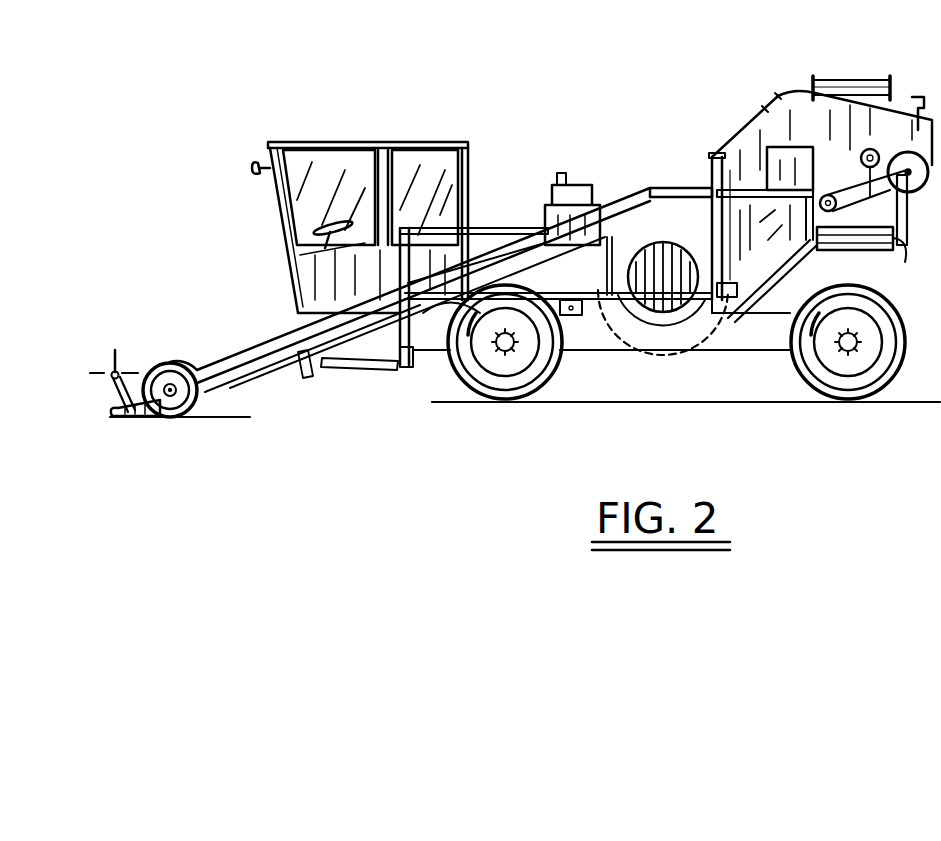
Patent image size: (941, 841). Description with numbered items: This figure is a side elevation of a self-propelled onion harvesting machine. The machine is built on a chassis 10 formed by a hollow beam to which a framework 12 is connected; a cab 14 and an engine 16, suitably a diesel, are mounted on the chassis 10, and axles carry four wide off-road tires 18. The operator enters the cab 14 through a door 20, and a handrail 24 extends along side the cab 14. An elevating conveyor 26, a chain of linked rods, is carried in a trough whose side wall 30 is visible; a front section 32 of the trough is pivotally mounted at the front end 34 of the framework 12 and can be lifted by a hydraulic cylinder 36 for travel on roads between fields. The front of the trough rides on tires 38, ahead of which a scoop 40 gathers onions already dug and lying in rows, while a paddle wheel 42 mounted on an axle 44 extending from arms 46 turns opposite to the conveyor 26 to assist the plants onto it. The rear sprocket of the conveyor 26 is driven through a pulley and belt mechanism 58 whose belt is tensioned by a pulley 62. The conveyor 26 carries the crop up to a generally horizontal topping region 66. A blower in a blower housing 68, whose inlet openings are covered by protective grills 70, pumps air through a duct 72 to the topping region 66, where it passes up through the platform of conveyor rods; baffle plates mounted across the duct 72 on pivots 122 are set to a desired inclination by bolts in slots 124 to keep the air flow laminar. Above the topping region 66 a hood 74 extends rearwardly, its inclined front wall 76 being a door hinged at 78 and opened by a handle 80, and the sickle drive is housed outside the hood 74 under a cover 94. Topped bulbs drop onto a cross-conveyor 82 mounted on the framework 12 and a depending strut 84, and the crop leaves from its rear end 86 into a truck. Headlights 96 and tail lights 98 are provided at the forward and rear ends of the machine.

The chassis 10 is at (762, 349).
The framework 12 is at (786, 252).
The cab 14 is at (294, 141).
The engine 16 is at (594, 206).
The tires 18 is at (472, 386).
The door 20 is at (428, 142).
The handrail 24 is at (500, 220).
The elevating conveyor 26 is at (710, 334).
The side wall 30 is at (526, 255).
The front section 32 is at (290, 344).
The front end 34 is at (400, 296).
The hydraulic cylinder 36 is at (352, 368).
The tires 38 is at (180, 416).
The scoop 40 is at (123, 420).
The paddle wheel 42 is at (112, 362).
The axle 44 is at (110, 377).
The arms 46 is at (112, 398).
The pulley and belt mechanism 58 is at (893, 206).
The pulley 62 is at (870, 149).
The topping region 66 is at (754, 152).
The blower housing 68 is at (643, 322).
The protective grills 70 is at (653, 244).
The duct 72 is at (667, 322).
The hood 74 is at (793, 95).
The front wall 76 is at (765, 108).
The hinge 78 is at (778, 95).
The handle 80 is at (710, 155).
The cross-conveyor 82 is at (878, 253).
The depending strut 84 is at (912, 262).
The rear end 86 is at (843, 86).
The cover 94 is at (805, 147).
The headlights 96 is at (257, 165).
The tail lights 98 is at (920, 97).
The pivots 122 is at (770, 222).
The slots 124 is at (775, 243).